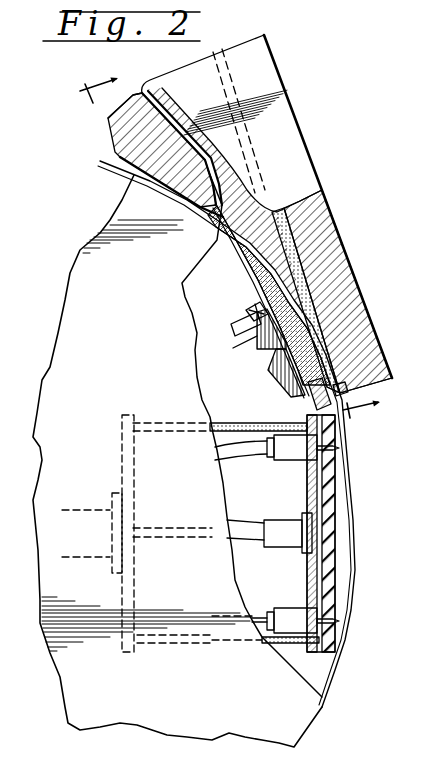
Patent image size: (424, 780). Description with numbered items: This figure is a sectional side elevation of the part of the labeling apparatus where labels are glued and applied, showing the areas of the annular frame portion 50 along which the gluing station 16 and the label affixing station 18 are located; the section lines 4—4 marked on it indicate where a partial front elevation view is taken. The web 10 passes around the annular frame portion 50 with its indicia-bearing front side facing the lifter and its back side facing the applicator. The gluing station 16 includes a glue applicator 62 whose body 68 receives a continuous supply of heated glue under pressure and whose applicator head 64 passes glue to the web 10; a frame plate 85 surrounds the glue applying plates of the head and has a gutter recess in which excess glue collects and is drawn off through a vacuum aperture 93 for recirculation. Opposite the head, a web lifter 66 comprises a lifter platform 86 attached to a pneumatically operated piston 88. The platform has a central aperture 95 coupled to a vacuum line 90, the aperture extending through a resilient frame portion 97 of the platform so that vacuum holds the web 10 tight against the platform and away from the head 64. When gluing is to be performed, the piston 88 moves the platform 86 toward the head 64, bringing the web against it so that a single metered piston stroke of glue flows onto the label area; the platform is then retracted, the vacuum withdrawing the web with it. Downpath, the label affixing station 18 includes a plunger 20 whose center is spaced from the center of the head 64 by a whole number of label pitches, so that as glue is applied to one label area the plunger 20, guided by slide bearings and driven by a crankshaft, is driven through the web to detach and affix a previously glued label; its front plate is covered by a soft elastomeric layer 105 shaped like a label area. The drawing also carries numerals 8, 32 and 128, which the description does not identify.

The section lines 4— 4 is at (236, 241).
The cowl member 8 is at (347, 363).
The web 10 is at (356, 480).
The gluing station 16 is at (356, 272).
The label affixing station 18 is at (348, 630).
The plunger 20 is at (341, 590).
The inlet cowl 32 is at (304, 97).
The annular frame portion 50 is at (323, 706).
The glue applicator 62 is at (382, 342).
The applicator head 64 is at (338, 320).
The web lifter 66 is at (277, 363).
The applicator body 68 is at (323, 237).
The frame plate 85 is at (209, 203).
The lifter platform 86 is at (183, 283).
The pneumatically operated piston 88 is at (248, 347).
The vacuum line 90 is at (232, 328).
The vacuum aperture 93 is at (180, 158).
The central aperture 95 is at (256, 309).
The resilient frame portion 97 is at (323, 390).
The elastomeric layer 105 is at (334, 507).
The passage 128 is at (318, 121).